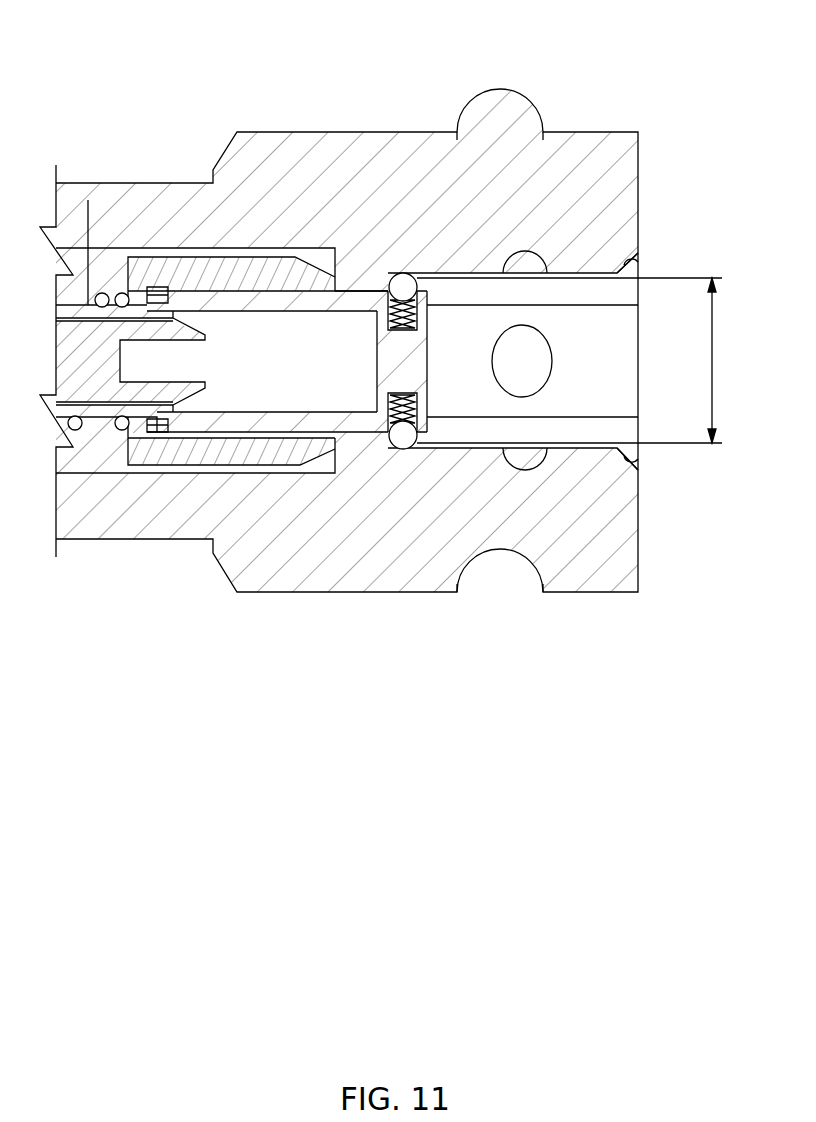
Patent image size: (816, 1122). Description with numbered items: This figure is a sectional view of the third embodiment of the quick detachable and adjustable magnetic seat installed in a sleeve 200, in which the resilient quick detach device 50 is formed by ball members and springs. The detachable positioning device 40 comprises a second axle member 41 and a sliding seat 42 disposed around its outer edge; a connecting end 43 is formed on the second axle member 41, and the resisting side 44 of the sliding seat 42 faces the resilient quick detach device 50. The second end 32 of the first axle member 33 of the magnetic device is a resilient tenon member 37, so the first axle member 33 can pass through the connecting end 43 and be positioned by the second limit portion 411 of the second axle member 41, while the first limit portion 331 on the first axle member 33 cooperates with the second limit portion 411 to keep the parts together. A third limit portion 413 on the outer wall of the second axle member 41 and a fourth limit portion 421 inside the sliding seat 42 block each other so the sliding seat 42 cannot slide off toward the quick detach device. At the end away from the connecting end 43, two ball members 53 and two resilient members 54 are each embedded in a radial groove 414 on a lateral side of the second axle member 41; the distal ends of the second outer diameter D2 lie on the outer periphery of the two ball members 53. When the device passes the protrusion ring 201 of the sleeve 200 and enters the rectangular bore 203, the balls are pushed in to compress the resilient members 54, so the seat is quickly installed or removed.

The sleeve 200 is at (572, 145).
The protrusion ring 201 is at (342, 150).
The rectangular bore 203 is at (617, 318).
The detachable positioning device 40 is at (291, 480).
The second axle member 41 is at (295, 277).
The second limit portion 411 is at (193, 332).
The sliding seat 42 is at (220, 456).
The fourth limit portion 421 is at (168, 293).
The connecting end 43 is at (88, 200).
The resisting side 44 is at (390, 432).
The resilient quick detach device 50 is at (440, 283).
The ball member 53 is at (405, 275).
The resilient member 54 is at (406, 300).
The radial groove 414 is at (409, 410).
The second end 32 is at (205, 333).
The first axle member 33 is at (122, 432).
The first limit portion 331 is at (147, 421).
The resilient tenon member 37 is at (193, 390).
The third limit portion 413 is at (150, 417).
The second outer diameter D2 is at (569, 360).